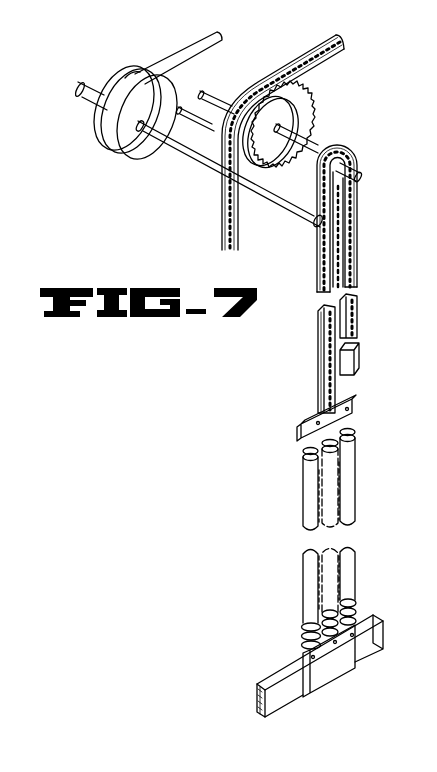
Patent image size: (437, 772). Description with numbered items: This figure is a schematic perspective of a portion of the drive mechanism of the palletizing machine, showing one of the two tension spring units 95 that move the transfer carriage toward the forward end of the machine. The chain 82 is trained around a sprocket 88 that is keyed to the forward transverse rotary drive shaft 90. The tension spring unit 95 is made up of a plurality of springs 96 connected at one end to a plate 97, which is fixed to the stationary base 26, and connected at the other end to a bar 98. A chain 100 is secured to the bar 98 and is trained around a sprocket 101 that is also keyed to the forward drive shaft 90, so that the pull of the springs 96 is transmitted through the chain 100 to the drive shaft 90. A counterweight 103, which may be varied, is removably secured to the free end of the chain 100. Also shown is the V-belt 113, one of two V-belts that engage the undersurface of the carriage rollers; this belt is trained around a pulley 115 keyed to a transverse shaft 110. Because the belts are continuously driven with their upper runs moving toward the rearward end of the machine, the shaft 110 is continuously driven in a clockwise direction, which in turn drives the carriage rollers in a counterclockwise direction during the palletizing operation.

The stationary base 26 is at (278, 668).
The chain 82 is at (315, 60).
The sprocket 88 is at (300, 80).
The forward transverse rotary drive shaft 90 is at (308, 148).
The tension spring unit 95 is at (303, 394).
The springs 96 is at (357, 437).
The plate 97 is at (323, 672).
The bar 98 is at (303, 432).
The chain 100 is at (328, 355).
The sprocket 101 is at (357, 195).
The counterweight 103 is at (357, 357).
The transverse shaft 110 is at (100, 77).
The V-belt 113 is at (192, 43).
The pulley 115 is at (135, 145).